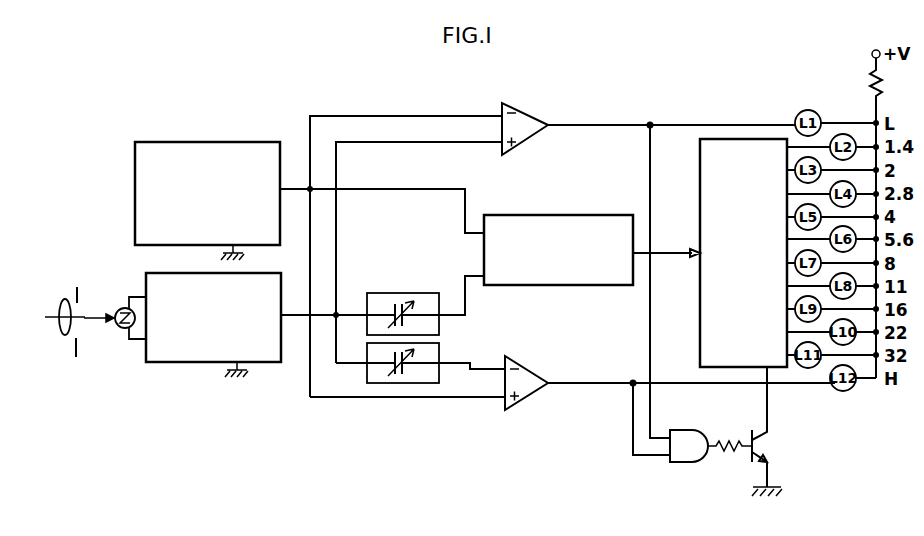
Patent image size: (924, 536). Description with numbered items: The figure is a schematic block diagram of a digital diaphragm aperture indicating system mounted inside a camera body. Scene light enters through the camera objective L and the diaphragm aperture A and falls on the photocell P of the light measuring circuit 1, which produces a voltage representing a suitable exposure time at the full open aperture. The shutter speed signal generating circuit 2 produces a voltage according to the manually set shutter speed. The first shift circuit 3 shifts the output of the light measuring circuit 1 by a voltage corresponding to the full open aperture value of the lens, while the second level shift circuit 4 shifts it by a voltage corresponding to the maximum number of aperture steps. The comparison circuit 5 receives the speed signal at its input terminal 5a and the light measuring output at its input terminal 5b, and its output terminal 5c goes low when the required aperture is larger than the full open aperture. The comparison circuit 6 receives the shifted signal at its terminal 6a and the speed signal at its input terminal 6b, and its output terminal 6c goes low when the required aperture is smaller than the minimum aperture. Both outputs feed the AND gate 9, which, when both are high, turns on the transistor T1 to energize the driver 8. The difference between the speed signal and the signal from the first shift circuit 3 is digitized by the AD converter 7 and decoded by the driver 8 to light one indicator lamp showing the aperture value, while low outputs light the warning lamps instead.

The light measuring circuit 1 is at (178, 363).
The shutter speed signal generating circuit 2 is at (192, 142).
The first shift circuit 3 is at (413, 292).
The second level shift circuit 4 is at (412, 384).
The comparison circuit 5 is at (532, 110).
The input terminal 5a is at (470, 115).
The input terminal 5b is at (473, 143).
The output terminal 5c is at (585, 123).
The comparison circuit 6 is at (530, 368).
The terminal 6a is at (492, 368).
The input terminal 6b is at (484, 398).
The output terminal 6c is at (557, 385).
The AD converter 7 is at (574, 215).
The driver 8 is at (700, 178).
The AND gate 9 is at (676, 462).
The photocell P is at (121, 309).
The camera objective L is at (62, 336).
The diaphragm aperture A is at (79, 347).
The transistor T1 is at (772, 445).